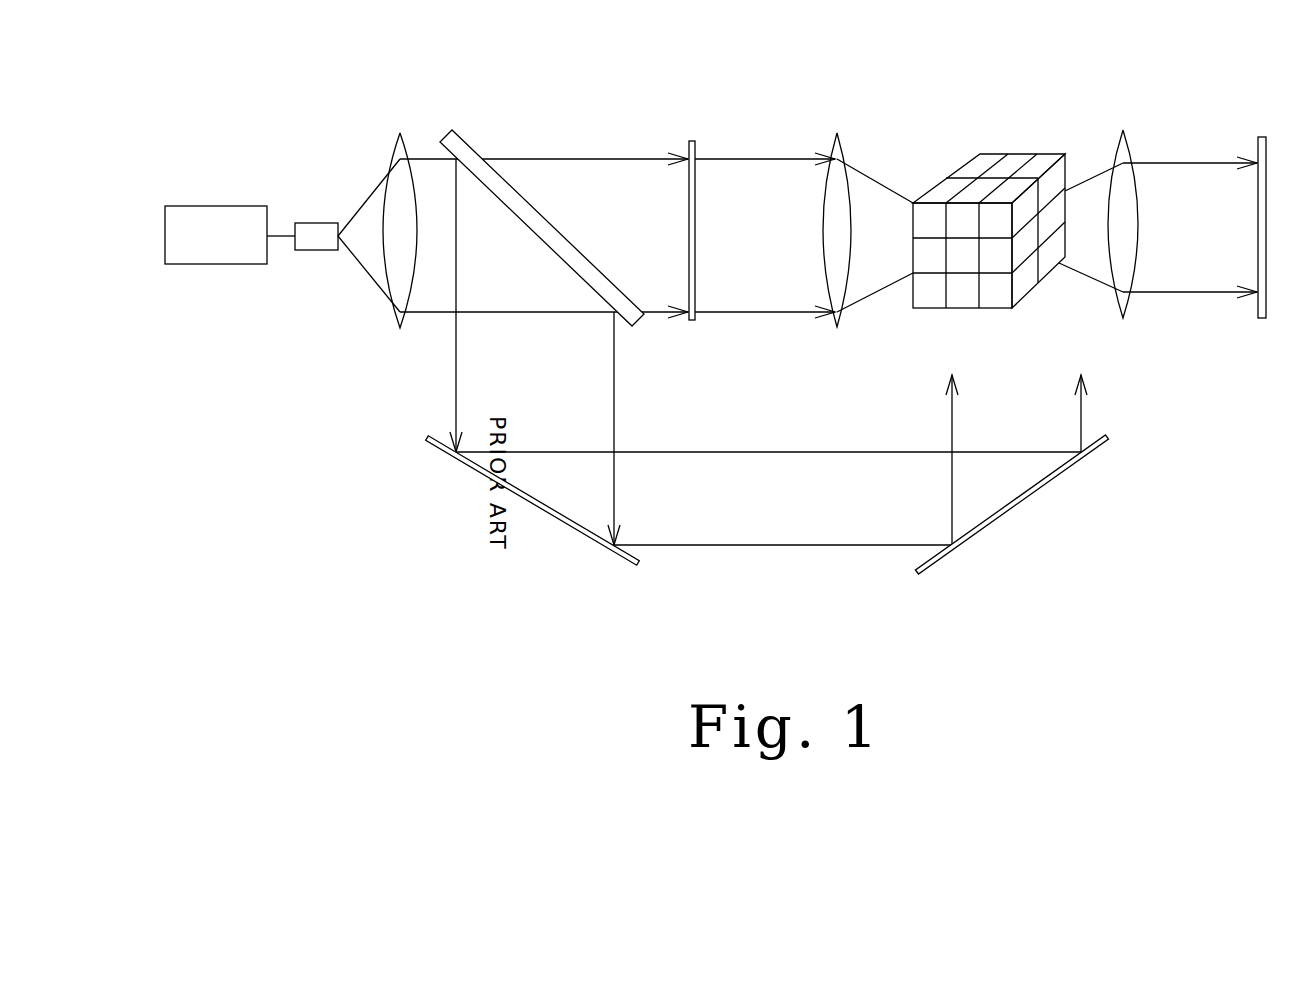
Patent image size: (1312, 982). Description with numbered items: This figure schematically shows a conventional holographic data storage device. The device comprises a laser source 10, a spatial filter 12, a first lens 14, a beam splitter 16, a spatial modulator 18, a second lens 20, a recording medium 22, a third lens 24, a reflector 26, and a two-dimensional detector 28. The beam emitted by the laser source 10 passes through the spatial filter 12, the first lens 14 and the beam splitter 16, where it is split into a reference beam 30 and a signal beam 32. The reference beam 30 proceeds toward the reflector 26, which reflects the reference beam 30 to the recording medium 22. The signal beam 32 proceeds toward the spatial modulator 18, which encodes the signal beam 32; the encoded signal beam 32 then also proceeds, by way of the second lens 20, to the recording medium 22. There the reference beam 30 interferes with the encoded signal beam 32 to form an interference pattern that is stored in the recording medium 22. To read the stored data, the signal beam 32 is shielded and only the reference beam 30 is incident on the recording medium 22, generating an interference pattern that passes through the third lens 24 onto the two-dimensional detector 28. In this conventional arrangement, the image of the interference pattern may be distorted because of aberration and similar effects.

The laser source 10 is at (215, 206).
The spatial filter 12 is at (320, 223).
The first lens 14 is at (400, 133).
The beam splitter 16 is at (470, 142).
The spatial modulator 18 is at (693, 141).
The second lens 20 is at (838, 133).
The recording medium 22 is at (1017, 155).
The third lens 24 is at (1124, 130).
The reflector 26 is at (470, 465).
The 2D detector 28 is at (1262, 137).
The reference beam 30 is at (790, 545).
The signal beam 32 is at (888, 186).